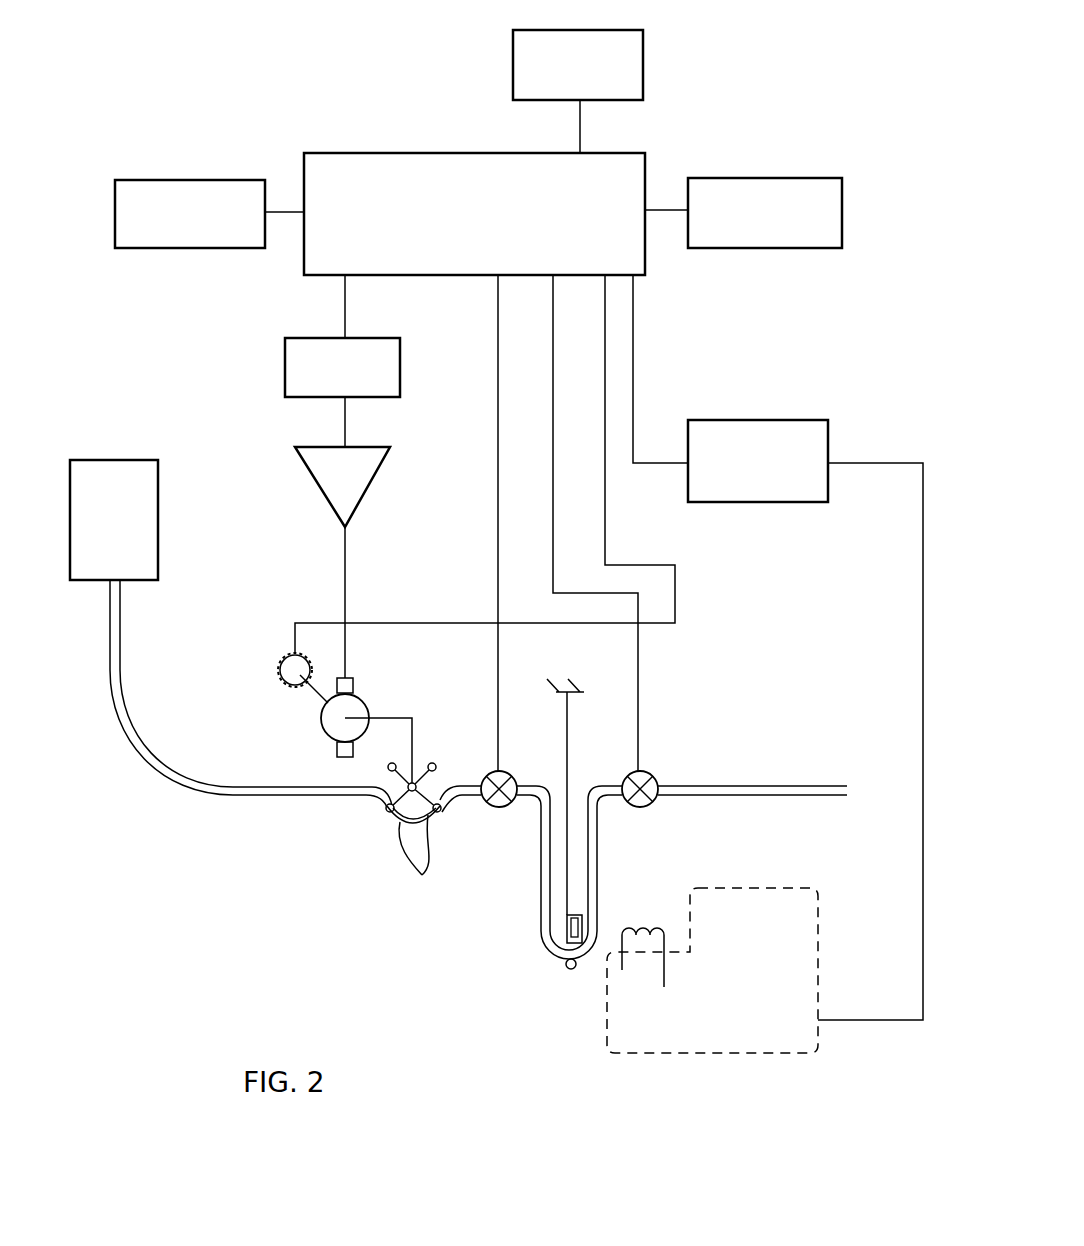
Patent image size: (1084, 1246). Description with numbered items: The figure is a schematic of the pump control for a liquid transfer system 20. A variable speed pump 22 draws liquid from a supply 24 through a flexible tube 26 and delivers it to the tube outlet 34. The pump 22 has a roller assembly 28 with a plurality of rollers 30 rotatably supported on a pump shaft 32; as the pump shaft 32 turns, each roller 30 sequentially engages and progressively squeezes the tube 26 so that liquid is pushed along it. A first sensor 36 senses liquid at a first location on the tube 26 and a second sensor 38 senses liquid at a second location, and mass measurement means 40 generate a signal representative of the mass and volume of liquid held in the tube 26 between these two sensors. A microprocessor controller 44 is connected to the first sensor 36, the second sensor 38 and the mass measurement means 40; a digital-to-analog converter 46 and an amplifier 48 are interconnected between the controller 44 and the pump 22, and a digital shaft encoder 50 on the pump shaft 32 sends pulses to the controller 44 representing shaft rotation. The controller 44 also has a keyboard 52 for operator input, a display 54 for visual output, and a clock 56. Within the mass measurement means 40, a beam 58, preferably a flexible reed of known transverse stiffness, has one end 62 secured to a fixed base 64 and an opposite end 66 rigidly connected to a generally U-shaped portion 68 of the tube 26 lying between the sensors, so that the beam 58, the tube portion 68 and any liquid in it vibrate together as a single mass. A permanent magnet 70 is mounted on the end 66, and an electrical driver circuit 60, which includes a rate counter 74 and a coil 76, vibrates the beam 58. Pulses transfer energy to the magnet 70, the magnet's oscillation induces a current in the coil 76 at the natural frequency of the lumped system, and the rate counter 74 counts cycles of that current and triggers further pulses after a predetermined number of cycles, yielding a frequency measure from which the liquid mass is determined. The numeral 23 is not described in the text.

The liquid transfer system 20 is at (244, 873).
The variable speed pump 22 is at (363, 703).
The pump inlet port 23 is at (353, 683).
The supply 24 is at (158, 517).
The flexible tube 26 is at (150, 755).
The roller assembly 28 is at (372, 797).
The rollers 30 is at (427, 854).
The pump shaft 32 is at (413, 728).
The tube outlet 34 is at (832, 795).
The first sensor 36 is at (499, 808).
The second sensor 38 is at (652, 775).
The mass measurement means 40 is at (614, 920).
The microprocessor controller 44 is at (322, 153).
The digital-to-analog converter 46 is at (285, 365).
The amplifier 48 is at (370, 485).
The digital shaft encoder 50 is at (280, 678).
The keyboard 52 is at (195, 180).
The display 54 is at (812, 178).
The clock 56 is at (643, 45).
The beam 58 is at (552, 880).
The electrical driver circuit 60 is at (776, 888).
The one end of the beam 62 is at (567, 705).
The fixed base 64 is at (568, 685).
The opposite end of the beam 66 is at (556, 958).
The U-shaped portion of the tube 68 is at (597, 842).
The permanent magnet 70 is at (583, 946).
The rate counter 74 is at (783, 420).
The coil 76 is at (646, 973).